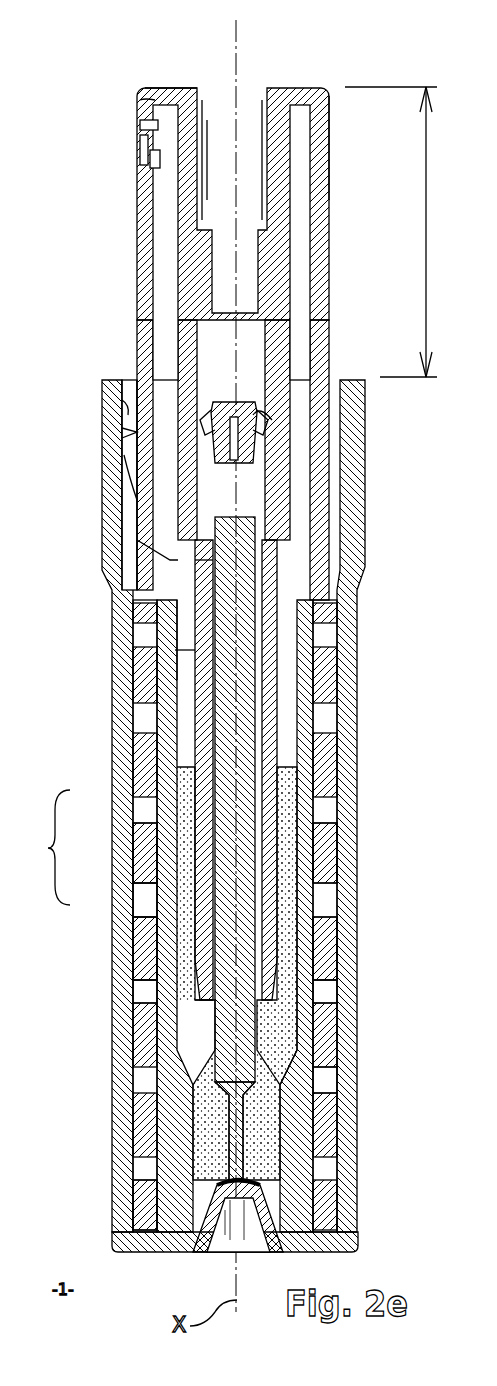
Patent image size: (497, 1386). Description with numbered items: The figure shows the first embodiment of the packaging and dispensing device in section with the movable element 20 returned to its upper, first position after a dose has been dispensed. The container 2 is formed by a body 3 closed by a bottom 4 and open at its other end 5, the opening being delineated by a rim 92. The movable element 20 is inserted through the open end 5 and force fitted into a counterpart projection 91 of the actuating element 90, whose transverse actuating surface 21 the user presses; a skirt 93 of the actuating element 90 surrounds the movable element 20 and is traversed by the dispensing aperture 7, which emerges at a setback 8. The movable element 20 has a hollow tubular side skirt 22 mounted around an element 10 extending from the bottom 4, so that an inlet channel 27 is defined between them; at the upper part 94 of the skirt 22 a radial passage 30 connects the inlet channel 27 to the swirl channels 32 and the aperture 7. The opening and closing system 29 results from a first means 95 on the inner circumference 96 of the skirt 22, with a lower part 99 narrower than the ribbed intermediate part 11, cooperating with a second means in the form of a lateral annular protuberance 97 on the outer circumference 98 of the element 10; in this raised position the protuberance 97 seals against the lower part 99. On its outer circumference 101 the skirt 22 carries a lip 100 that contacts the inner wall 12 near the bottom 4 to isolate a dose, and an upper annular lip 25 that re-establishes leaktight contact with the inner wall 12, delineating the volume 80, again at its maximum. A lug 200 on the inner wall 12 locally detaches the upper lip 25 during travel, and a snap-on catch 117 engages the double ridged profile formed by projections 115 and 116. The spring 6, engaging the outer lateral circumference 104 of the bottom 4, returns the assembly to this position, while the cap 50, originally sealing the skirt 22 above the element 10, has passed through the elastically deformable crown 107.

The transverse actuating surface 21 is at (150, 92).
The counterpart projection 91 is at (217, 122).
The radial passage 30 is at (140, 100).
The setback 8 is at (140, 127).
The dispensing aperture 7 is at (140, 150).
The swirl channels 32 is at (150, 162).
The skirt 93 is at (330, 140).
The actuating element 90 is at (320, 200).
The movable element 20 is at (290, 265).
The open end 5 is at (355, 384).
The upper part of the skirt 94 is at (207, 343).
The rim 92 is at (102, 381).
The snap-on catch 117 is at (122, 410).
The projection of double ridged annular profile 116 is at (124, 432).
The projection of double ridged annular profile 115 is at (120, 465).
The leaktightness means 50 is at (215, 440).
The elastically deformable crown 107 is at (250, 418).
The upper annular lip 25 is at (160, 555).
The outer circumference of the element 98 is at (215, 600).
The inner circumference of the skirt 96 is at (205, 640).
The lug 200 is at (175, 668).
The outer circumference of the skirt 101 is at (200, 690).
The inlet channel 27 is at (200, 730).
The volume 80 is at (300, 628).
The spring 6 is at (338, 760).
The intermediate part 11 is at (180, 850).
The lower part 99 is at (205, 880).
The first means 95 is at (160, 870).
The lateral annular protuberance 97 is at (150, 910).
The opening and closing system 29 is at (43, 847).
The hollow tubular side skirt 22 is at (335, 845).
The container 2 is at (325, 935).
The body 3 is at (320, 990).
The element 10 is at (300, 1070).
The lip 100 is at (178, 1005).
The inner wall 12 is at (190, 1025).
The outer lateral circumference of the bottom 104 is at (150, 1205).
The bottom 4 is at (162, 1246).